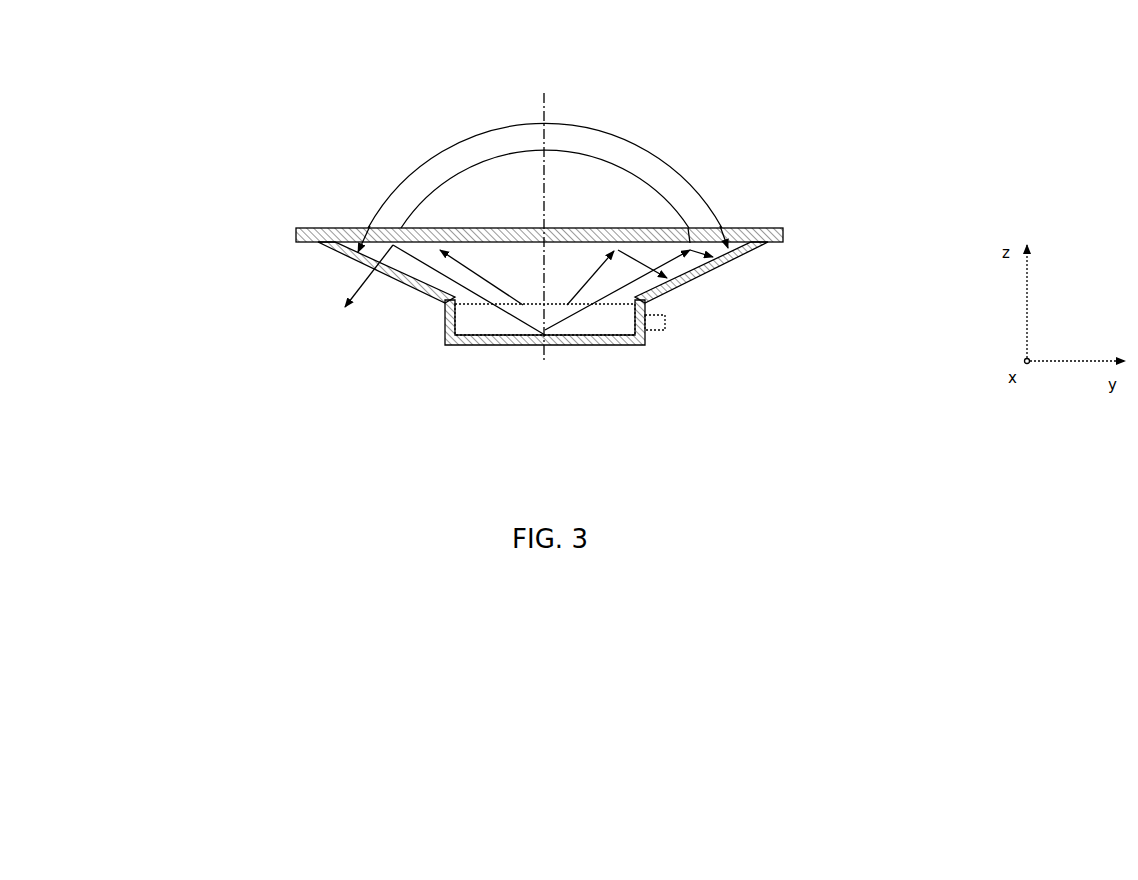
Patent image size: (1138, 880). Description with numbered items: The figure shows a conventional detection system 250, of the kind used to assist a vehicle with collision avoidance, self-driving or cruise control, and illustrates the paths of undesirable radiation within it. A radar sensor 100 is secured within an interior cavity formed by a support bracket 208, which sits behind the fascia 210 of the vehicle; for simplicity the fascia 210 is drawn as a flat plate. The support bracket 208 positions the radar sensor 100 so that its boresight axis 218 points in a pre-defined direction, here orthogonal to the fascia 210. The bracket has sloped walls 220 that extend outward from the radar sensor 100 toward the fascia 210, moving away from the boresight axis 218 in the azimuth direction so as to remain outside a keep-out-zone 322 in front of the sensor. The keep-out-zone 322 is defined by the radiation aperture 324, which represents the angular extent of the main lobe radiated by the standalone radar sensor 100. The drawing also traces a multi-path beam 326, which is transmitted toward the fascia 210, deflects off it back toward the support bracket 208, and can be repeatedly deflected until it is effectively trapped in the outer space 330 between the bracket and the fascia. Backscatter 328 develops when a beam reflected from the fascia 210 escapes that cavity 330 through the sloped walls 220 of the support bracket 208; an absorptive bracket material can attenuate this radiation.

The radar sensor 100 is at (598, 330).
The support bracket 208 is at (450, 345).
The fascia 210 is at (315, 228).
The boresight axis 218 is at (545, 98).
The sloped walls 220 is at (345, 252).
The detection system 250 is at (233, 187).
The keep-out-zone 322 is at (470, 140).
The radiation aperture 324 is at (640, 180).
The multi-path beam 326 is at (683, 265).
The backscatter 328 is at (372, 290).
The outer space 330 is at (742, 247).